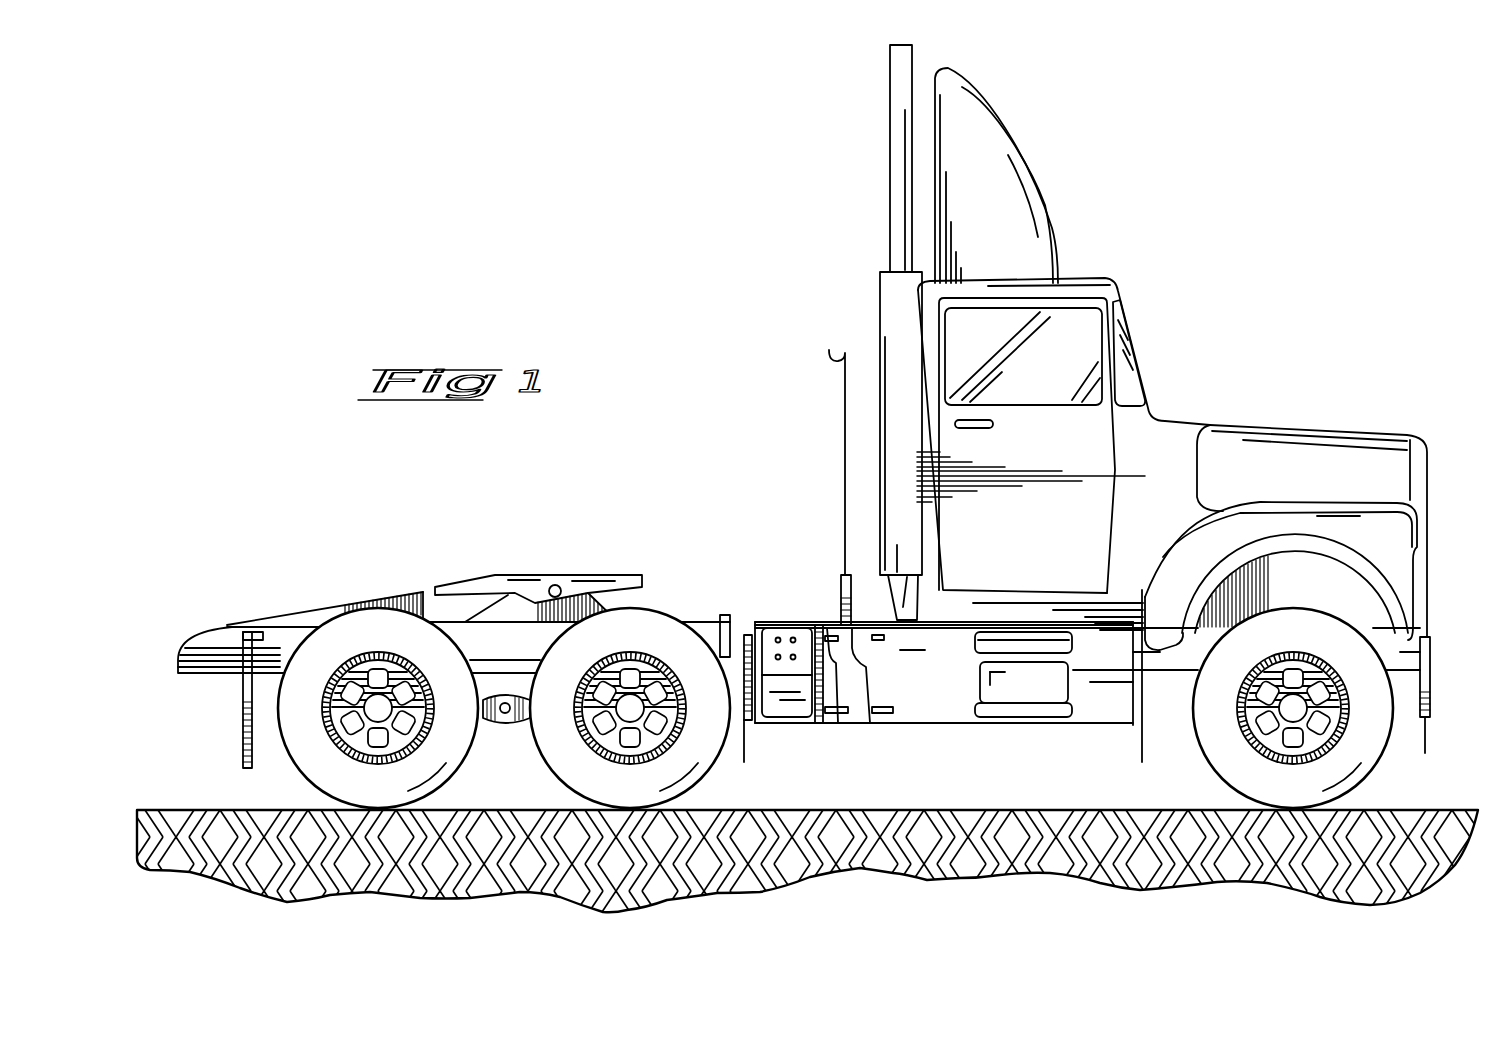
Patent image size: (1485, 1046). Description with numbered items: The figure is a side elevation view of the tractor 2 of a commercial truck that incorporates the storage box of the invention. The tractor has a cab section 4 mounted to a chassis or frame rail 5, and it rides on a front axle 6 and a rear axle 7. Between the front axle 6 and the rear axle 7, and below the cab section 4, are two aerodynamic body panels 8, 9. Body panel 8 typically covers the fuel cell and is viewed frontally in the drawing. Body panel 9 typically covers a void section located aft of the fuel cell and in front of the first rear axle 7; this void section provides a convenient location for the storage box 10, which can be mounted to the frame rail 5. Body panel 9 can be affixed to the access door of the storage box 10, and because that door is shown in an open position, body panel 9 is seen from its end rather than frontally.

The tractor 2 is at (1310, 187).
The cab section 4 is at (1145, 340).
The frame rail 5 is at (1170, 677).
The front axle 6 is at (1291, 705).
The rear axle 7 is at (628, 705).
The body panel 8 is at (943, 727).
The body panel 9 is at (872, 679).
The storage box 10 is at (771, 614).